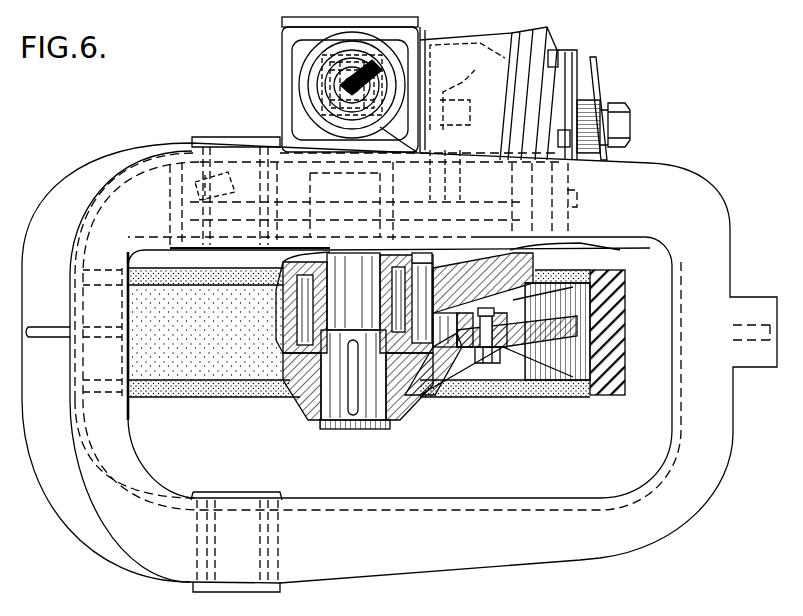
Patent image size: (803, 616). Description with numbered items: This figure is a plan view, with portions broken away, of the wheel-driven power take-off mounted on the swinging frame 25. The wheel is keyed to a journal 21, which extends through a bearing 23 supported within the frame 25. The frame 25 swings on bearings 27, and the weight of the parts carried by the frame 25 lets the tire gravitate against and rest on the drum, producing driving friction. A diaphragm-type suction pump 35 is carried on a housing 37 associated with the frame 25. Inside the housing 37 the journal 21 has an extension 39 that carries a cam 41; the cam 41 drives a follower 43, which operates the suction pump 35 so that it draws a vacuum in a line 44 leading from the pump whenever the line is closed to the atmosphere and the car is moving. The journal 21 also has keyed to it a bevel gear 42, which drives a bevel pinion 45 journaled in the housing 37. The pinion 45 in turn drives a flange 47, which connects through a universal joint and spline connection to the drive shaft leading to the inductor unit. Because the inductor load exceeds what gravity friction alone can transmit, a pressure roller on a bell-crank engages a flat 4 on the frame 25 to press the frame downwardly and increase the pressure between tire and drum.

The flat 4 is at (746, 360).
The journal 21 is at (366, 420).
The bearing 23 is at (270, 308).
The swinging frame 25 is at (147, 167).
The bearings 27 is at (224, 140).
The suction pump 35 is at (318, 70).
The housing 37 is at (432, 40).
The extension 39 is at (342, 58).
The cam 41 is at (364, 86).
The bevel gear 42 is at (200, 189).
The follower 43 is at (345, 92).
The line 44 is at (377, 118).
The bevel pinion 45 is at (463, 100).
The flange 47 is at (600, 79).